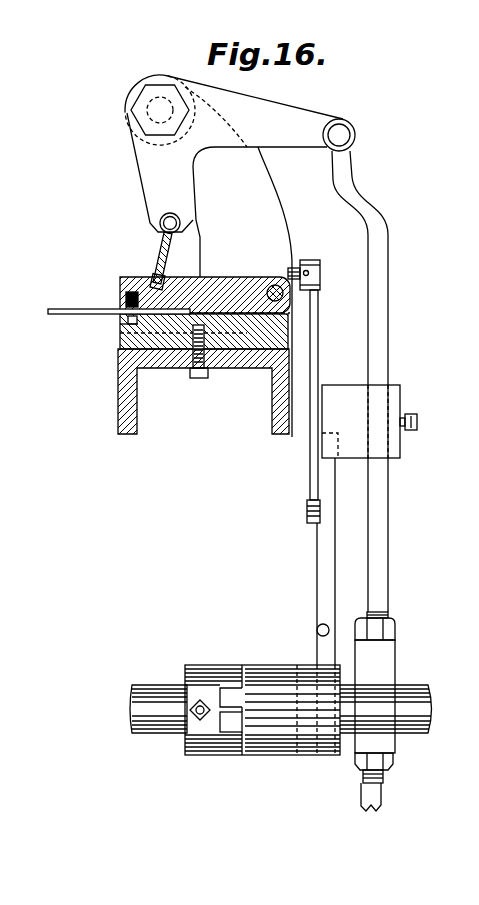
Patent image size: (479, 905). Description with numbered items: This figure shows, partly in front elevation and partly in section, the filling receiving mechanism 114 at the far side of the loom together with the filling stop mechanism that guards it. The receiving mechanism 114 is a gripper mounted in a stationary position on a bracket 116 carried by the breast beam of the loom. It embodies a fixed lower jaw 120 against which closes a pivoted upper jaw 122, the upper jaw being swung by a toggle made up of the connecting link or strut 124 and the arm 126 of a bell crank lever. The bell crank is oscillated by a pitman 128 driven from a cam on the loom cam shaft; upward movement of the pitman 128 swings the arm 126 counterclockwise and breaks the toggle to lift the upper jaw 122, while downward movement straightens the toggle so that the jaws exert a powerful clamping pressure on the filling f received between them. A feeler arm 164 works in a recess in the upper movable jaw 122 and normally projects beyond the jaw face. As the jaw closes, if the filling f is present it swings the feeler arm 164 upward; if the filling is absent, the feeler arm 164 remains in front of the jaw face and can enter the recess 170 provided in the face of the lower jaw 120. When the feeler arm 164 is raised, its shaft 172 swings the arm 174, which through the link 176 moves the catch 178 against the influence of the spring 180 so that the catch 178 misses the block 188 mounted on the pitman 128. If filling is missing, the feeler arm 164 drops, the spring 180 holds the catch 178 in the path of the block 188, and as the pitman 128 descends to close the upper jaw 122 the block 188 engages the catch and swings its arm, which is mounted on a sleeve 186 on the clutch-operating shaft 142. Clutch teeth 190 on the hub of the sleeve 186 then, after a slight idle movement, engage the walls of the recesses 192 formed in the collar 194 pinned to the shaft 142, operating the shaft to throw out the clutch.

The arm of bell crank lever 126 is at (143, 175).
The pitman 128 is at (389, 297).
The receiving mechanism 114 is at (180, 292).
The pivoted upper jaw 122 is at (200, 274).
The connecting link or strut 124 is at (180, 243).
The fixed lower jaw 120 is at (157, 340).
The bracket 116 is at (118, 412).
The filling f is at (52, 316).
The feeler arm 164 is at (125, 298).
The recess 170 is at (122, 328).
The shaft 172 is at (322, 272).
The arm 174 is at (319, 342).
The link 176 is at (307, 507).
The catch 178 is at (322, 560).
The spring 180 is at (318, 627).
The block 188 is at (396, 396).
The clutch-operating shaft 142 is at (150, 722).
The sleeve 186 is at (270, 752).
The collar 194 is at (193, 677).
The recesses 192 is at (227, 686).
The clutch teeth 190 is at (230, 733).